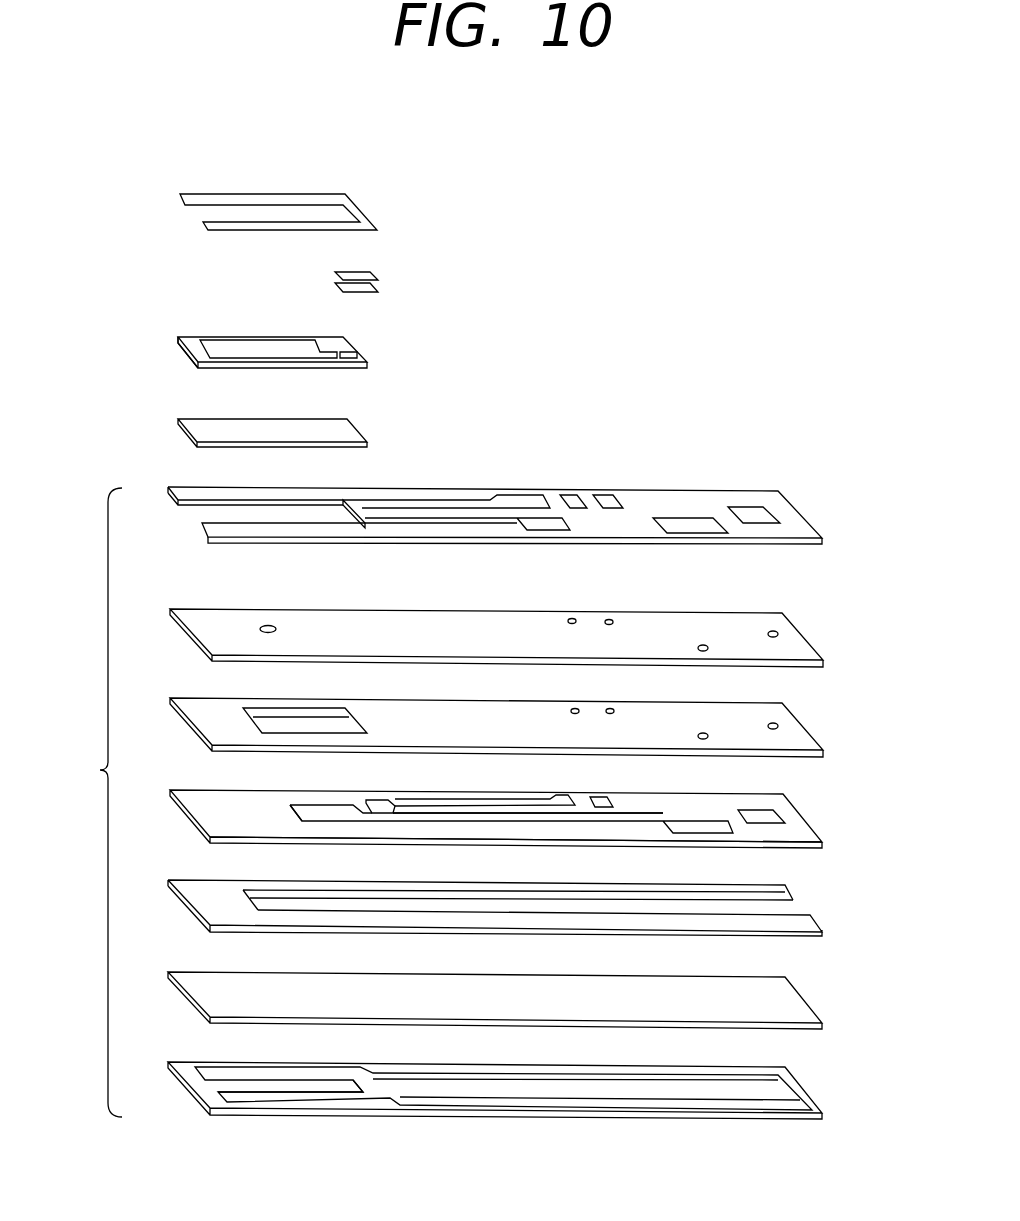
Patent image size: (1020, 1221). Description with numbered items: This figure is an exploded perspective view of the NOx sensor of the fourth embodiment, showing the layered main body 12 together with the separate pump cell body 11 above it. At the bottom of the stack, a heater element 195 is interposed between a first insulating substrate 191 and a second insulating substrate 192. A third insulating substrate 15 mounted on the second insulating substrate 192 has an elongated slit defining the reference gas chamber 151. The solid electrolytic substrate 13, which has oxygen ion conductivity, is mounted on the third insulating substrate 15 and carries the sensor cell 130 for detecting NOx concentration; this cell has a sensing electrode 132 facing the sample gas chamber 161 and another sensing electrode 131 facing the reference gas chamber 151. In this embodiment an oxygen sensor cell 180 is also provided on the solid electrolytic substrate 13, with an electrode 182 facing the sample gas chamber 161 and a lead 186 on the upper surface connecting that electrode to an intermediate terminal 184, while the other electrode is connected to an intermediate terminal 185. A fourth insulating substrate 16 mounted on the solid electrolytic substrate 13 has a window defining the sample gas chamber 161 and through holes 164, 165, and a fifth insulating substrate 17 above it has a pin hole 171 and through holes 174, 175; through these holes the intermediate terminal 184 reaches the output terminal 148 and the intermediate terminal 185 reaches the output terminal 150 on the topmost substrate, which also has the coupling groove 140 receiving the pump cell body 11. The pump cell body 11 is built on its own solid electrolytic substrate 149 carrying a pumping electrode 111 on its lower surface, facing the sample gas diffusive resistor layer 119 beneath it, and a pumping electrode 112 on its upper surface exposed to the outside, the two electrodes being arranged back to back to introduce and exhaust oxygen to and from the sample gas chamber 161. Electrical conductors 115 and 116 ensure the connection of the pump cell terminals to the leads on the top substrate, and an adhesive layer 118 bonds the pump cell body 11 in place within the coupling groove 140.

The pump cell body 11 is at (172, 344).
The main body 12 is at (485, 809).
The solid electrolytic substrate 13 is at (518, 808).
The third insulating substrate 15 is at (529, 908).
The fourth insulating substrate 16 is at (528, 713).
The fifth insulating substrate 17 is at (528, 613).
The pumping electrode 111 is at (244, 340).
The pumping electrode 112 is at (265, 346).
The electrical conductor 115 is at (362, 291).
The electrical conductor 116 is at (360, 273).
The adhesive layer 118 is at (318, 200).
The sample gas diffusive resistor layer 119 is at (198, 428).
The sensor cell 130 is at (253, 807).
The sensing electrode 131 is at (317, 850).
The sensing electrode 132 is at (332, 805).
The coupling groove 140 is at (495, 489).
The output terminal 148 is at (575, 496).
The solid electrolytic substrate 149 is at (192, 358).
The output terminal 150 is at (615, 500).
The reference gas chamber 151 is at (752, 888).
The sample gas chamber 161 is at (290, 709).
The through hole 164 is at (572, 710).
The through hole 165 is at (613, 711).
The pin hole 171 is at (262, 627).
The through hole 174 is at (569, 619).
The through hole 175 is at (610, 619).
The oxygen sensor cell 180 is at (412, 813).
The electrode 182 is at (382, 800).
The intermediate terminal 184 is at (560, 797).
The intermediate terminal 185 is at (613, 803).
The lead 186 is at (542, 804).
The first insulating substrate 191 is at (531, 1120).
The second insulating substrate 192 is at (787, 995).
The heater element 195 is at (295, 1099).